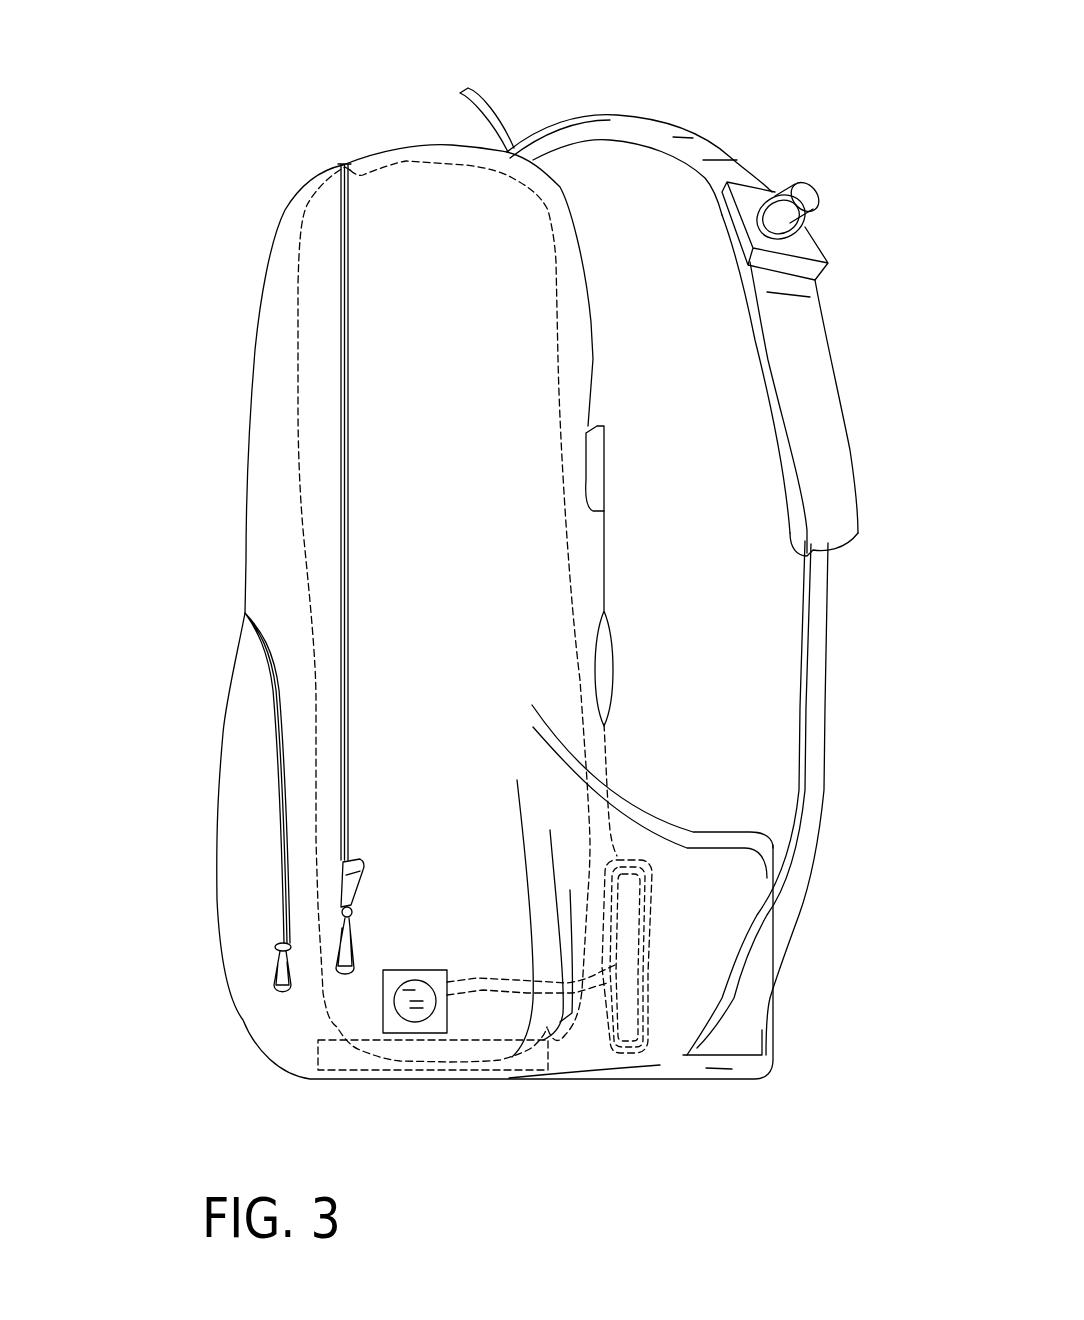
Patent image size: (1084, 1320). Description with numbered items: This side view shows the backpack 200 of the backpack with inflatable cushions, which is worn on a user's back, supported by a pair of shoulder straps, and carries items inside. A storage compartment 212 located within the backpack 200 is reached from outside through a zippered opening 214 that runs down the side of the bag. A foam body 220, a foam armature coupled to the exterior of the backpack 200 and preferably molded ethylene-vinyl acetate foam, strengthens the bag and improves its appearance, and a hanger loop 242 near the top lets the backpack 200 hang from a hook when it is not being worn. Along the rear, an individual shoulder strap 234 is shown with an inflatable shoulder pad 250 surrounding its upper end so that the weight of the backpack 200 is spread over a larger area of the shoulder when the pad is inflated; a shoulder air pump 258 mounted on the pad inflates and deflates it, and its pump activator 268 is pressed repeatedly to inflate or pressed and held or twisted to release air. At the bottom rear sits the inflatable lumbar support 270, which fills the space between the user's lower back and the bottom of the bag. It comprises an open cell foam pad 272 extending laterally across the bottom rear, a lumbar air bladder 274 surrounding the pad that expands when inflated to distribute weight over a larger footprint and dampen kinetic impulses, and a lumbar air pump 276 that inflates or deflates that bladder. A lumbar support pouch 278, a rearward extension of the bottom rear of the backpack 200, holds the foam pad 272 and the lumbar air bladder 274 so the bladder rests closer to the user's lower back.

The backpack 200 is at (157, 82).
The storage compartment 212 is at (298, 368).
The zippered opening 214 is at (350, 216).
The foam body 220 is at (560, 140).
The shoulder strap 234 is at (825, 636).
The hanger loop 242 is at (481, 101).
The inflatable shoulder pad 250 is at (708, 152).
The shoulder air pump 258 is at (865, 173).
The pump activator 268 is at (808, 199).
The inflatable lumbar support 270 is at (830, 825).
The open cell foam pad 272 is at (623, 1033).
The lumbar air bladder 274 is at (643, 982).
The lumbar air pump 276 is at (433, 1035).
The lumbar support pouch 278 is at (647, 870).